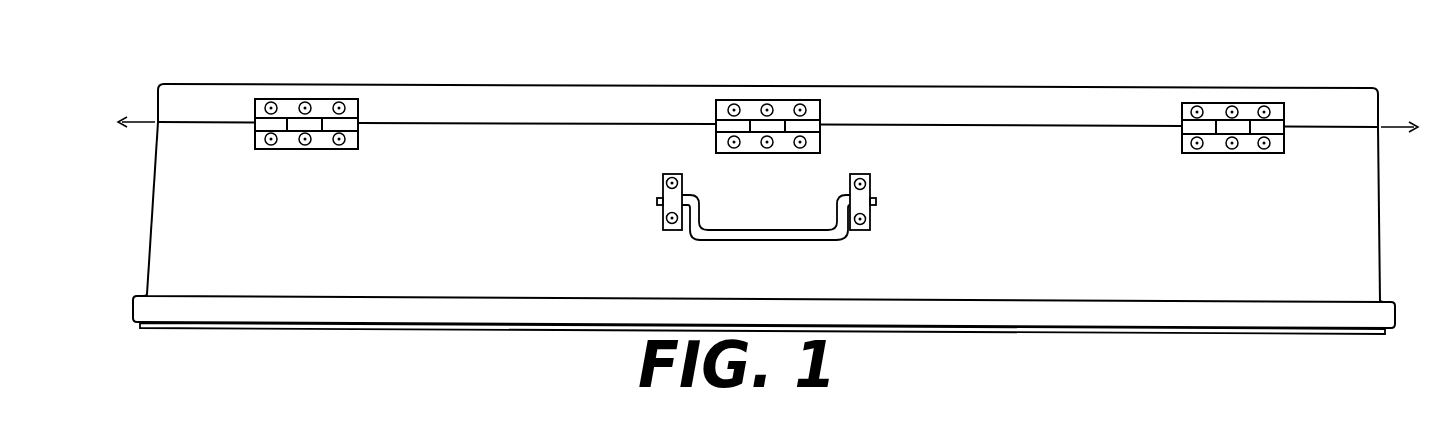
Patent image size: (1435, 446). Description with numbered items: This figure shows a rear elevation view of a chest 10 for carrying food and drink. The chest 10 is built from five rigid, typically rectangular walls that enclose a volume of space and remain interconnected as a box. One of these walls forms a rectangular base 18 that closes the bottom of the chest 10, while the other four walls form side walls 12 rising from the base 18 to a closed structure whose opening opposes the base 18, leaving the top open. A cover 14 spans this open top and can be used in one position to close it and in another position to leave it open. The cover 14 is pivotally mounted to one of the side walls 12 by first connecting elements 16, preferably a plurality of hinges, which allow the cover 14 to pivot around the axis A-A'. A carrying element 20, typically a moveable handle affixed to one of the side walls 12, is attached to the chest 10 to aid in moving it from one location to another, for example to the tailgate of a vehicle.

The chest 10 is at (737, 64).
The side walls 12 is at (1132, 213).
The cover 14 is at (978, 98).
The first connecting elements 16 is at (325, 106).
The base 18 is at (1287, 317).
The carrying element 20 is at (755, 232).